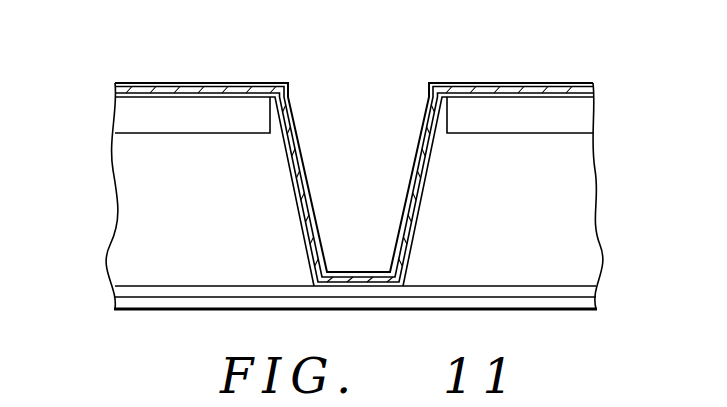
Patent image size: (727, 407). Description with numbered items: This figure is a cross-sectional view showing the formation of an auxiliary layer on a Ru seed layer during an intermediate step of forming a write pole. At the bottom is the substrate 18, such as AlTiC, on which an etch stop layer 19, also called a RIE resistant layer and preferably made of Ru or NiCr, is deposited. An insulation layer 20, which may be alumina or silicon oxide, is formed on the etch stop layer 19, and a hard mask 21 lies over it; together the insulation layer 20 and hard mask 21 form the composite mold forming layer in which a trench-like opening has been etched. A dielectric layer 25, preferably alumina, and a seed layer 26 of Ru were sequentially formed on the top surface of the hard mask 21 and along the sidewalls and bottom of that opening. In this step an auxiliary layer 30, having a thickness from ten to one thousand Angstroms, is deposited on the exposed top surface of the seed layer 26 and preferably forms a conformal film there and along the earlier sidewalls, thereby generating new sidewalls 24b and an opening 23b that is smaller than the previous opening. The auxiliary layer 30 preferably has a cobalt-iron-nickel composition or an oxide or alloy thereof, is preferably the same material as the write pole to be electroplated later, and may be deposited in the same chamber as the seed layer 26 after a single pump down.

The substrate 18 is at (117, 310).
The etch stop layer 19 is at (582, 290).
The insulation layer 20 is at (582, 217).
The hard mask 21 is at (120, 120).
The opening 23b is at (330, 117).
The sidewalls 24b is at (320, 232).
The dielectric layer 25 is at (592, 93).
The seed layer 26 is at (594, 83).
The auxiliary layer 30 is at (530, 83).